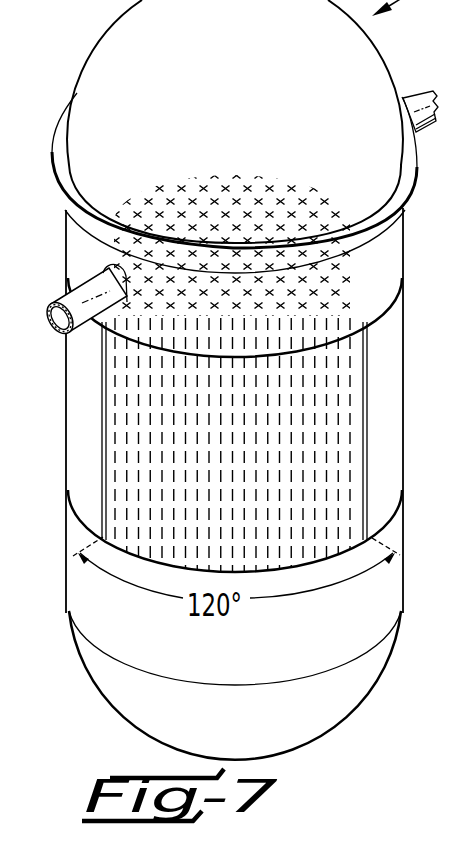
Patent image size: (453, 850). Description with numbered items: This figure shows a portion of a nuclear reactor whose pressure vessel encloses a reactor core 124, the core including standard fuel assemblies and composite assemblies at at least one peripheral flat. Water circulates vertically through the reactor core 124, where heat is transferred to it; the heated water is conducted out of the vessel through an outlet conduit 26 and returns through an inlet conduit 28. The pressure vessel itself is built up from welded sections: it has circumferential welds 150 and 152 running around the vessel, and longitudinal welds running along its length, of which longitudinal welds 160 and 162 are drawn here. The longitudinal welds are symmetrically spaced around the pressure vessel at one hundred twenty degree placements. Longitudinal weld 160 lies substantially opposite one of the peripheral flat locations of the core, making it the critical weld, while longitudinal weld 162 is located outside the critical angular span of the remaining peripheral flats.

The outlet conduit 26 is at (420, 100).
The inlet conduit 28 is at (88, 290).
The reactor core 124 is at (283, 133).
The circumferential weld 150 is at (382, 522).
The circumferential weld 152 is at (380, 309).
The longitudinal weld 160 is at (367, 415).
The longitudinal weld 162 is at (103, 458).